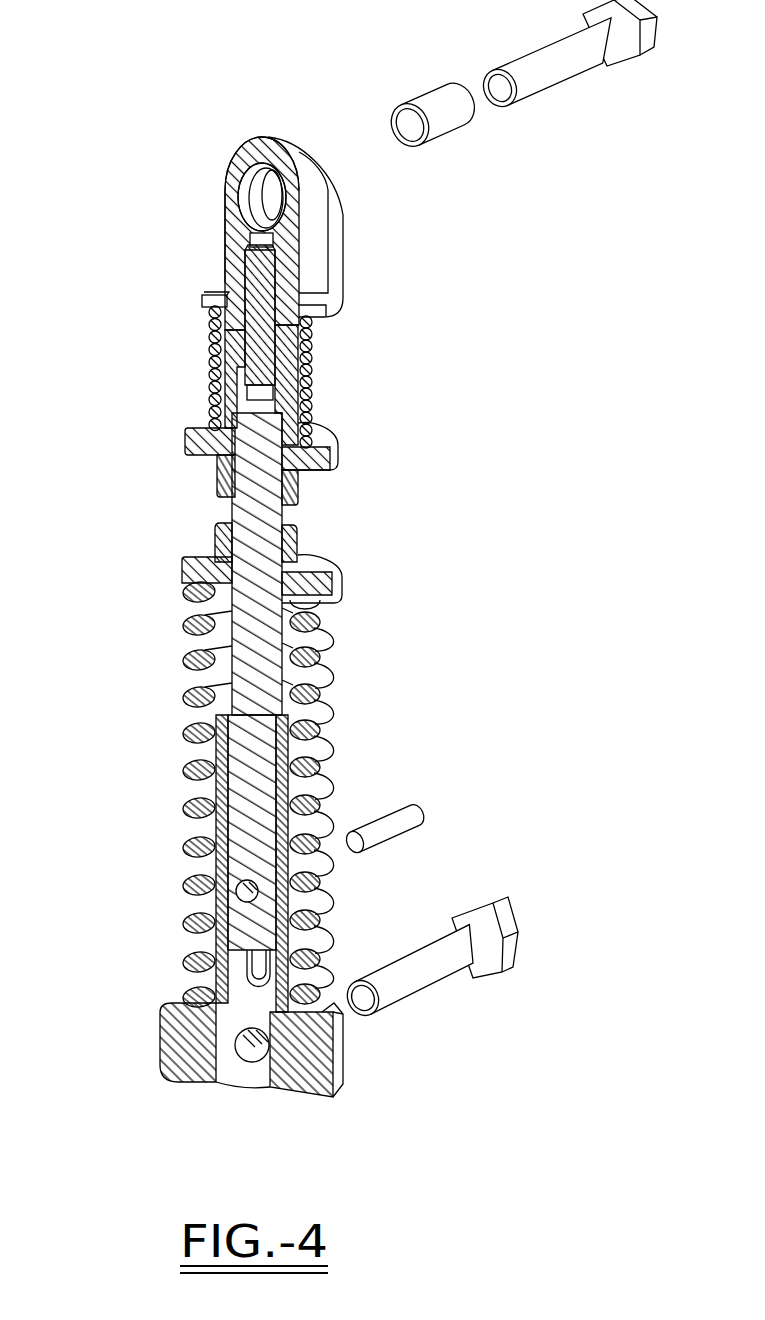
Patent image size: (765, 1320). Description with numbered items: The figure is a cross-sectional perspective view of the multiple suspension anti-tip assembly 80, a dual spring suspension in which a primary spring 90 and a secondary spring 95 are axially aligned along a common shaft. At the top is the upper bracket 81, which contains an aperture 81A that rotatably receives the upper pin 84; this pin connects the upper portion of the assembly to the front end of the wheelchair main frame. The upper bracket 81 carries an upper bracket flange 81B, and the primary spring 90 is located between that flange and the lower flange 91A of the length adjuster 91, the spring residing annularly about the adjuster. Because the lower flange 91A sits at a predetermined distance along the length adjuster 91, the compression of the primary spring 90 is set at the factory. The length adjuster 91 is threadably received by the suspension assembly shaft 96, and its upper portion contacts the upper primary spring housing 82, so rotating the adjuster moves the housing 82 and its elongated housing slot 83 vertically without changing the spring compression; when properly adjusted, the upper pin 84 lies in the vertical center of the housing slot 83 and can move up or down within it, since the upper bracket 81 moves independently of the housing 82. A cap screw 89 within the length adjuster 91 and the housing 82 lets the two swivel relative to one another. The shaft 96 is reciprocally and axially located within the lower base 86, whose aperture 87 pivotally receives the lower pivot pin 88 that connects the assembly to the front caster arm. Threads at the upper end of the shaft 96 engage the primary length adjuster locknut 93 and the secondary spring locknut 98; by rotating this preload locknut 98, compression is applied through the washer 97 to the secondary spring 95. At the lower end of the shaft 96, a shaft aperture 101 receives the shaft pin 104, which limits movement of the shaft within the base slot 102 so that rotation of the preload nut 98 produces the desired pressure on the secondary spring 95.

The multiple suspension anti-tip assembly 80 is at (170, 112).
The upper bracket 81 is at (331, 186).
The aperture 81A is at (275, 190).
The upper bracket flange 81B is at (320, 321).
The upper primary spring housing 82 is at (232, 261).
The housing slot 83 is at (247, 190).
The upper pin 84 is at (556, 72).
The base 86 is at (343, 1067).
The aperture 87 is at (247, 1054).
The lower pivot pin 88 is at (420, 986).
The cap screw 89 is at (257, 301).
The primary spring 90 is at (322, 378).
The length adjuster 91 is at (226, 357).
The lower flange 91A is at (322, 461).
The primary length adjuster locknut 93 is at (300, 484).
The secondary spring 95 is at (350, 687).
The suspension assembly shaft 96 is at (240, 684).
The washer 97 is at (323, 578).
The secondary spring locknut 98 is at (293, 539).
The shaft aperture 101 is at (245, 895).
The base slot 102 is at (258, 972).
The shaft pin 104 is at (404, 828).